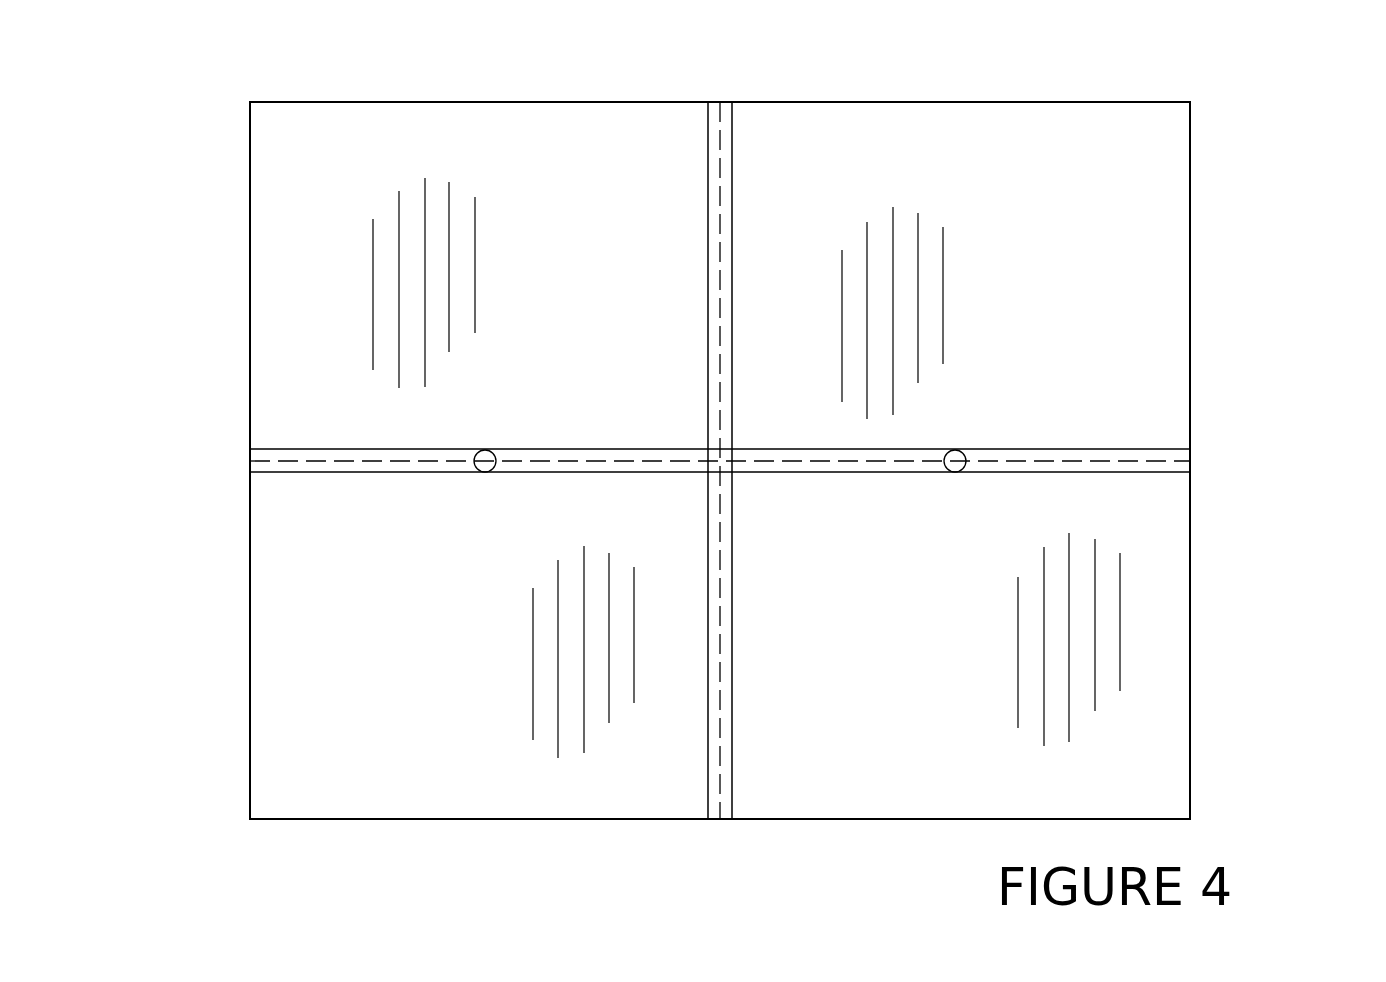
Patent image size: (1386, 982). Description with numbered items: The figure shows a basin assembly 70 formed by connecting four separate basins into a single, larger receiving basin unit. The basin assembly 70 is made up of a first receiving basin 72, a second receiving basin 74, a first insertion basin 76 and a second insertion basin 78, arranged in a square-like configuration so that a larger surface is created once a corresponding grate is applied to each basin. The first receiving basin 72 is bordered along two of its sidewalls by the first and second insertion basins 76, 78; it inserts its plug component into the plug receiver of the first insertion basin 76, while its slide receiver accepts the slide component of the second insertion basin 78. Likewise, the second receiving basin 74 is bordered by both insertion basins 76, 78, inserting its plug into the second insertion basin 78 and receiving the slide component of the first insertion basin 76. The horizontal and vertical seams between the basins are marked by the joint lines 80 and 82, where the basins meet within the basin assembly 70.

The basin assembly 70 is at (185, 115).
The first receiving basin 72 is at (250, 168).
The second receiving basin 74 is at (1190, 620).
The first insertion basin 76 is at (250, 612).
The second insertion basin 78 is at (1190, 220).
The horizontal hinge 80 is at (1190, 458).
The vertical hinge 82 is at (712, 102).